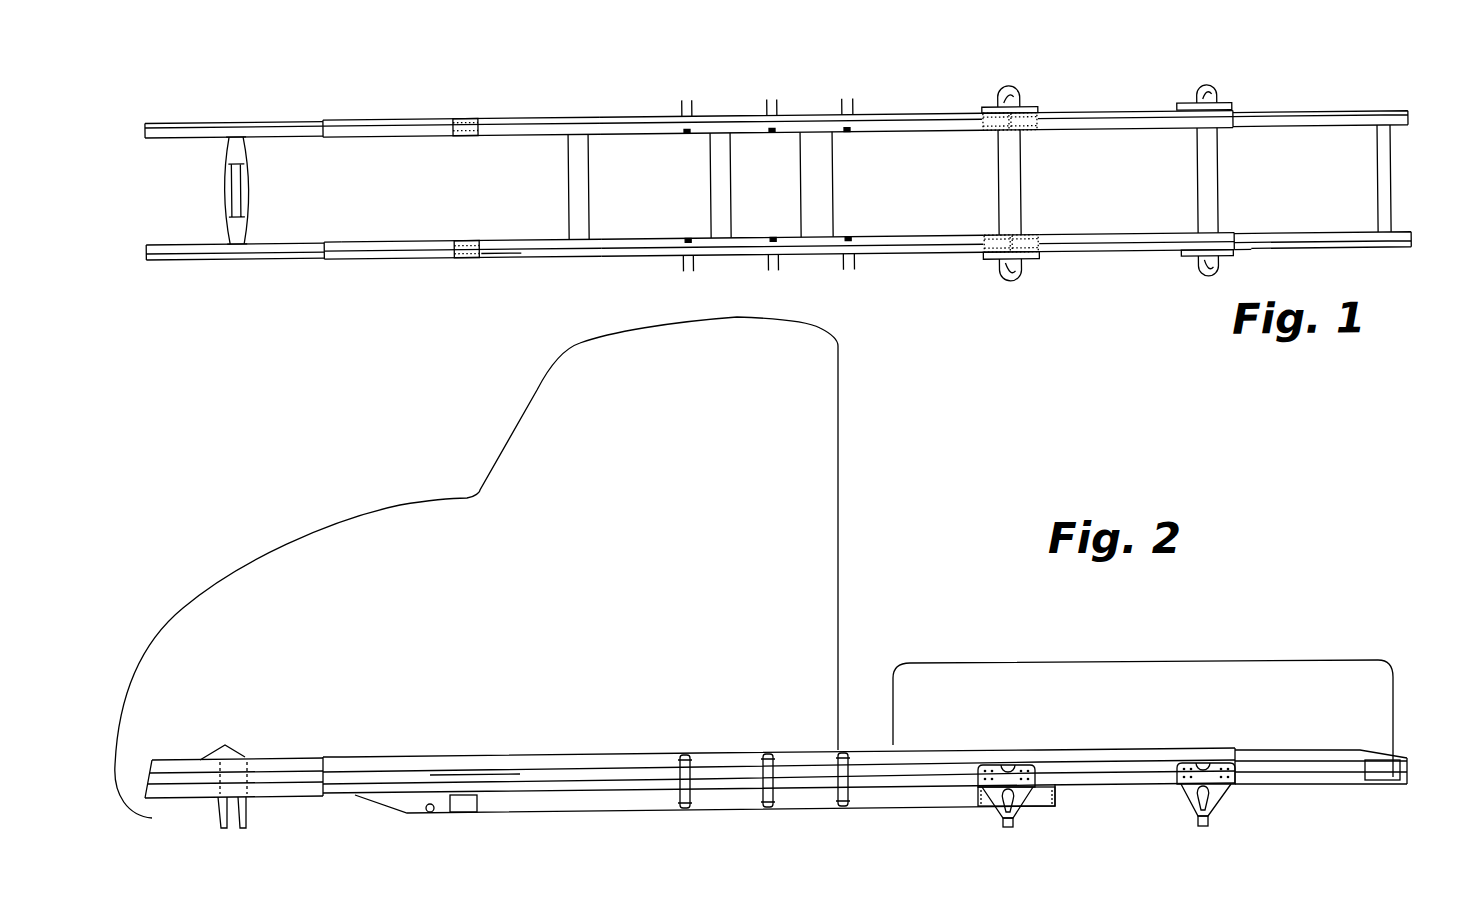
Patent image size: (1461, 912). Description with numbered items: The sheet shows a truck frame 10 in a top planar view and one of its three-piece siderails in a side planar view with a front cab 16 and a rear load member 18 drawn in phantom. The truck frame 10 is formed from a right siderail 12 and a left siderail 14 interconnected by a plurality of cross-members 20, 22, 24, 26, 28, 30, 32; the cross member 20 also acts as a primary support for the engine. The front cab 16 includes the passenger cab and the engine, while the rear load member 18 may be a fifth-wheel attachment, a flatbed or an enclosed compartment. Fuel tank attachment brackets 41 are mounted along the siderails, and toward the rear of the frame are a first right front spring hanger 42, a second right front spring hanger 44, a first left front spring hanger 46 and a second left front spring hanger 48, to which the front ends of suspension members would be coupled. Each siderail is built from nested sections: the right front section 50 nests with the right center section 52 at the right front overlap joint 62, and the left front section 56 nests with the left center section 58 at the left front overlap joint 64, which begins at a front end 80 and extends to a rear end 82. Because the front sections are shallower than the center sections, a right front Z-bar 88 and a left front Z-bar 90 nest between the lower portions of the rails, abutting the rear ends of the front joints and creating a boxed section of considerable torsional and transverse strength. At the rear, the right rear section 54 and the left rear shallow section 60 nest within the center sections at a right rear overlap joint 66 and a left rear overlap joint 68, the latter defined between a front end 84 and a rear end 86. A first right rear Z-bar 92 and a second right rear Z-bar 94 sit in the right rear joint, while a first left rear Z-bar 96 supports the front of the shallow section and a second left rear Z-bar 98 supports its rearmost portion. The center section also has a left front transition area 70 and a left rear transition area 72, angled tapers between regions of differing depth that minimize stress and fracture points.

In FIG. 1, the truck frame 10 is at (762, 70).
In FIG. 1, the right siderail 12 is at (574, 118).
In FIG. 1, the left siderail 14 is at (562, 270).
In FIG. 2, the left siderail 14 is at (752, 812).
In FIG. 2, the front cab 16 is at (682, 443).
In FIG. 2, the rear load member 18 is at (1136, 662).
In FIG. 1, the cross member 20 is at (240, 192).
In FIG. 2, the cross member 20 is at (244, 816).
In FIG. 1, the cross member 22 is at (582, 194).
In FIG. 1, the cross member 24 is at (724, 186).
In FIG. 1, the cross member 26 is at (828, 166).
In FIG. 1, the cross member 28 is at (1014, 196).
In FIG. 1, the cross member 30 is at (1220, 202).
In FIG. 1, the cross member 32 is at (1387, 172).
In FIG. 2, the cross member 32 is at (1388, 780).
In FIG. 1, the fuel tank attachment bracket 41 is at (695, 114).
In FIG. 2, the fuel tank attachment bracket 41 is at (687, 757).
In FIG. 1, the first right front spring hanger 42 is at (1013, 105).
In FIG. 1, the second right front spring hanger 44 is at (1209, 102).
In FIG. 1, the first left front spring hanger 46 is at (1010, 290).
In FIG. 2, the first left front spring hanger 46 is at (1010, 826).
In FIG. 1, the second left front spring hanger 48 is at (1207, 288).
In FIG. 2, the second left front spring hanger 48 is at (1210, 822).
In FIG. 1, the right front section 50 is at (226, 123).
In FIG. 1, the right center section 52 is at (896, 122).
In FIG. 1, the right rear section 54 is at (1288, 124).
In FIG. 1, the left front section 56 is at (176, 259).
In FIG. 2, the left front section 56 is at (160, 792).
In FIG. 1, the left center section 58 is at (920, 262).
In FIG. 2, the left center section 58 is at (570, 805).
In FIG. 1, the left rear shallow section 60 is at (1286, 247).
In FIG. 1, the right front overlap joint 62 is at (384, 121).
In FIG. 1, the left front overlap joint 64 is at (396, 263).
In FIG. 2, the left front overlap joint 64 is at (450, 755).
In FIG. 1, the right rear overlap joint 66 is at (1110, 121).
In FIG. 1, the left rear overlap joint 68 is at (1127, 264).
In FIG. 2, the left rear overlap joint 68 is at (1120, 747).
In FIG. 2, the left front transition area 70 is at (390, 806).
In FIG. 2, the left rear transition area 72 is at (1075, 790).
In FIG. 1, the front end 80 is at (324, 245).
In FIG. 2, the front end 80 is at (324, 757).
In FIG. 1, the rear end 82 is at (493, 261).
In FIG. 2, the rear end 82 is at (476, 778).
In FIG. 2, the front end 84 is at (975, 780).
In FIG. 1, the rear end 86 is at (1240, 252).
In FIG. 2, the rear end 86 is at (1245, 757).
In FIG. 1, the right front Z-bar 88 is at (464, 122).
In FIG. 1, the left front Z-bar 90 is at (463, 245).
In FIG. 2, the left front Z-bar 90 is at (470, 806).
In FIG. 1, the first right rear Z-bar 92 is at (988, 141).
In FIG. 1, the second right rear Z-bar 94 is at (1050, 141).
In FIG. 1, the first left rear Z-bar 96 is at (991, 248).
In FIG. 2, the first left rear Z-bar 96 is at (976, 806).
In FIG. 1, the second left rear Z-bar 98 is at (1046, 270).
In FIG. 2, the second left rear Z-bar 98 is at (1056, 800).